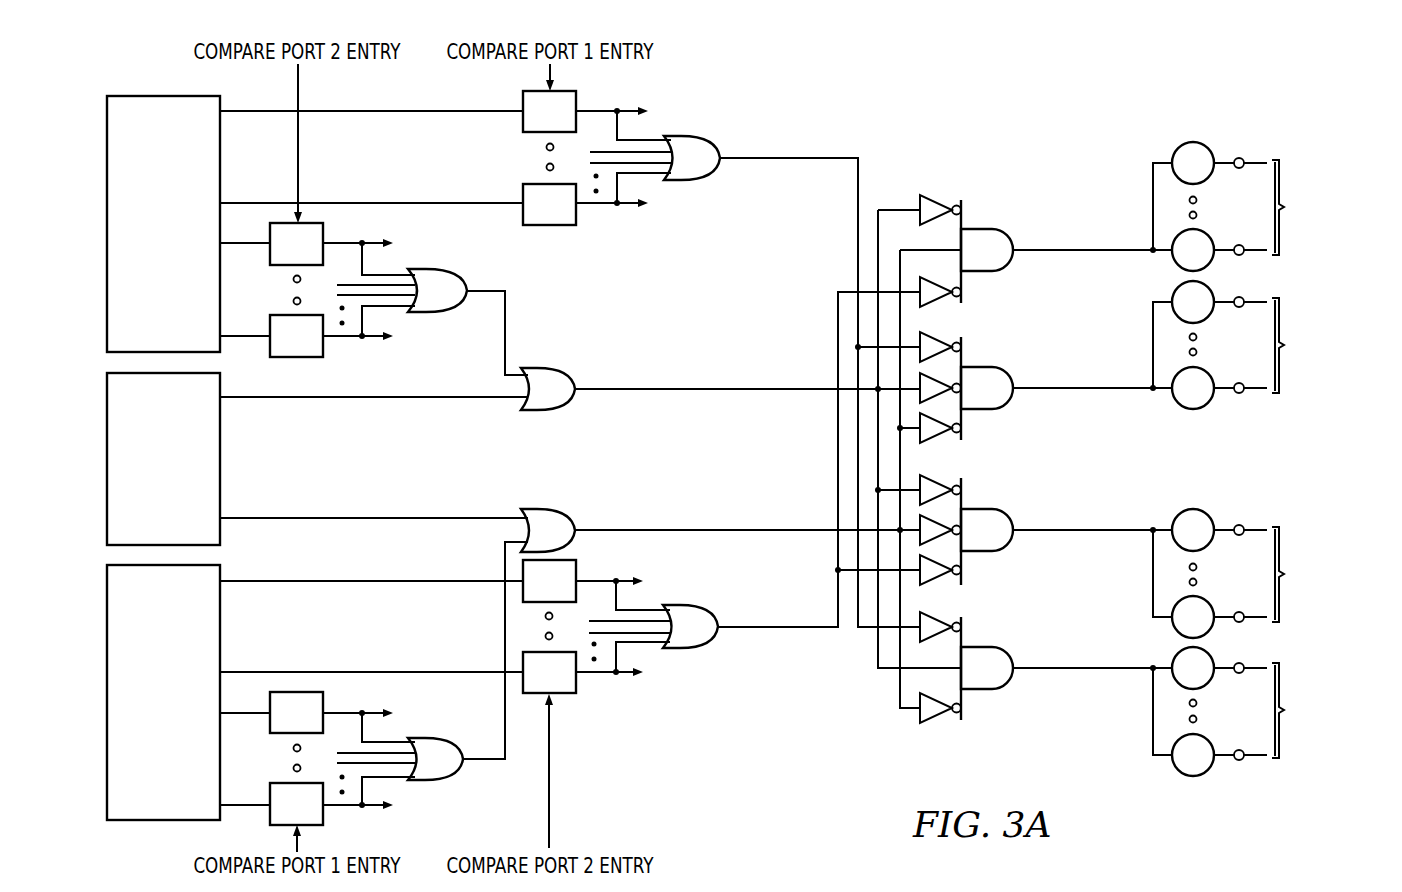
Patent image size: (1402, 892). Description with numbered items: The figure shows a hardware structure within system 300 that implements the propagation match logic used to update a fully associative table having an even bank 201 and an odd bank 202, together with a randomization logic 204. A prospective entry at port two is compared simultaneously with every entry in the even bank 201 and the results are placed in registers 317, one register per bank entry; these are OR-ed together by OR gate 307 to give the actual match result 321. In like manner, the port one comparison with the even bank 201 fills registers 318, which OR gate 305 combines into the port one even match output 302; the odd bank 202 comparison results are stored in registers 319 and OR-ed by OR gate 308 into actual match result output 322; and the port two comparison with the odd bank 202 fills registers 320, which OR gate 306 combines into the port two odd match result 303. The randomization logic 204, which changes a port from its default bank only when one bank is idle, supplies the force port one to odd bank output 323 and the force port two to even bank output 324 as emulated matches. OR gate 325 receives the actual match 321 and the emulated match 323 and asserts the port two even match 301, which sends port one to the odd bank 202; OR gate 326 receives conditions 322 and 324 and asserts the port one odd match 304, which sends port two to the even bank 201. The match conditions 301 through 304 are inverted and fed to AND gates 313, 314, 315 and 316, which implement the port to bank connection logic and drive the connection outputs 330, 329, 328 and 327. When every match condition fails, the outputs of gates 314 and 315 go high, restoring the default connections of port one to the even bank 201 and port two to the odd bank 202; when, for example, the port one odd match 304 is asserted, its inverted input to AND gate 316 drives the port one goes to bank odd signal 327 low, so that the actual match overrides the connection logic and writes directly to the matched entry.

The system 300 is at (1046, 108).
The even bank 201 is at (181, 262).
The randomization logic 204 is at (181, 487).
The odd bank 202 is at (181, 735).
The registers 317 is at (282, 318).
The registers 318 is at (523, 193).
The registers 319 is at (282, 783).
The registers 320 is at (563, 694).
The OR gate 305 is at (693, 180).
The OR gate 307 is at (437, 312).
The OR gate 308 is at (437, 780).
The OR gate 306 is at (692, 604).
The actual match result 321 is at (508, 320).
The actual match result output 322 is at (503, 610).
The force port 1 to odd bank output 323 is at (365, 399).
The force port 2 to even bank output 324 is at (365, 520).
The OR gate 325 is at (563, 408).
The OR gate 326 is at (565, 510).
The port 2 even match 301 is at (690, 391).
The port 1 even match output 302 is at (787, 160).
The port 2 odd match result 303 is at (788, 629).
The port 1 odd match 304 is at (758, 532).
The AND gate 313 is at (983, 228).
The AND gate 314 is at (983, 366).
The AND gate 315 is at (982, 552).
The AND gate 316 is at (982, 690).
The port 2 goes to even bank signal 330 is at (1082, 252).
The port 1 goes to even bank signal 329 is at (1082, 390).
The port 2 goes to odd bank signal 328 is at (1082, 532).
The port 1 goes to bank odd signal 327 is at (1082, 670).